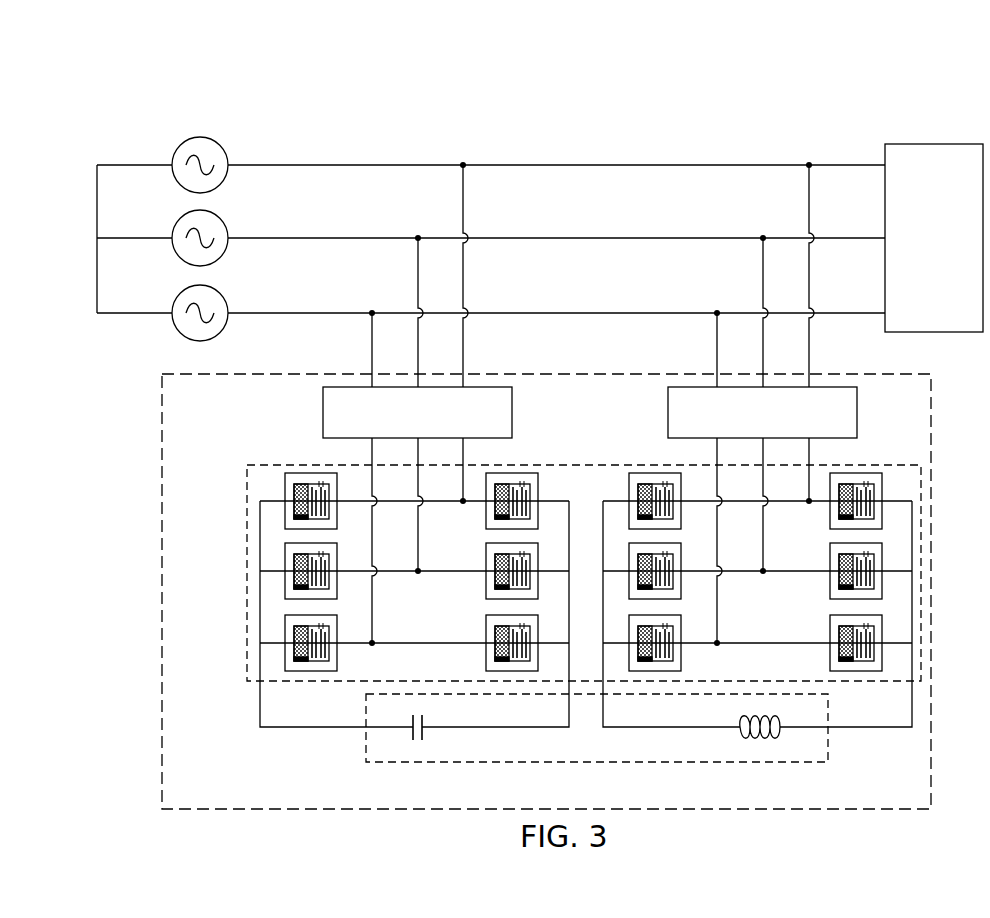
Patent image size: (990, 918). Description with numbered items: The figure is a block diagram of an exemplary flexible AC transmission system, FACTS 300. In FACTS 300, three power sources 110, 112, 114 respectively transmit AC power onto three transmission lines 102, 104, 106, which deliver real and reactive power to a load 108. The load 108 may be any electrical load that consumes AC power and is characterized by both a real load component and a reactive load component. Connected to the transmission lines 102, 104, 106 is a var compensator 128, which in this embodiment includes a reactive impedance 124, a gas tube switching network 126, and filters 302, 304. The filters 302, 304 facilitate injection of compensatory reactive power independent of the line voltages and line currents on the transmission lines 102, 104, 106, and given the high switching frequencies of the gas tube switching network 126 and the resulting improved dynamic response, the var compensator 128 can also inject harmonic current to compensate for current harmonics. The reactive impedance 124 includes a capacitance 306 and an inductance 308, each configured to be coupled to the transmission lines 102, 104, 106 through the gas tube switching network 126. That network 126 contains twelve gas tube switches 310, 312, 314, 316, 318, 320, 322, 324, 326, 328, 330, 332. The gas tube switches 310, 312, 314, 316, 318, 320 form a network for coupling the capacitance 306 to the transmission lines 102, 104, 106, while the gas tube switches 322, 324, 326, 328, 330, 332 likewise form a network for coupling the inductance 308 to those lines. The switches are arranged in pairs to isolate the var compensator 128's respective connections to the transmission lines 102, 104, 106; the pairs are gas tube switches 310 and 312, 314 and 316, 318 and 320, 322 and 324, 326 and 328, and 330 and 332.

The FACTS 300 is at (156, 90).
The transmission line 102 is at (307, 308).
The transmission line 104 is at (355, 237).
The transmission line 106 is at (428, 162).
The load 108 is at (967, 334).
The power source 110 is at (173, 302).
The power source 112 is at (173, 231).
The power source 114 is at (173, 158).
The reactive impedance 124 is at (366, 750).
The gas tube switching network 126 is at (247, 656).
The var compensator 128 is at (162, 604).
The filter 302 is at (323, 411).
The filter 304 is at (857, 411).
The capacitance 306 is at (432, 742).
The inductance 308 is at (794, 739).
The gas tube switch 310 is at (285, 487).
The gas tube switch 312 is at (517, 473).
The gas tube switch 314 is at (285, 555).
The gas tube switch 316 is at (538, 553).
The gas tube switch 318 is at (285, 627).
The gas tube switch 320 is at (530, 671).
The gas tube switch 322 is at (637, 473).
The gas tube switch 324 is at (882, 517).
The gas tube switch 326 is at (681, 590).
The gas tube switch 328 is at (882, 587).
The gas tube switch 330 is at (660, 671).
The gas tube switch 332 is at (882, 657).